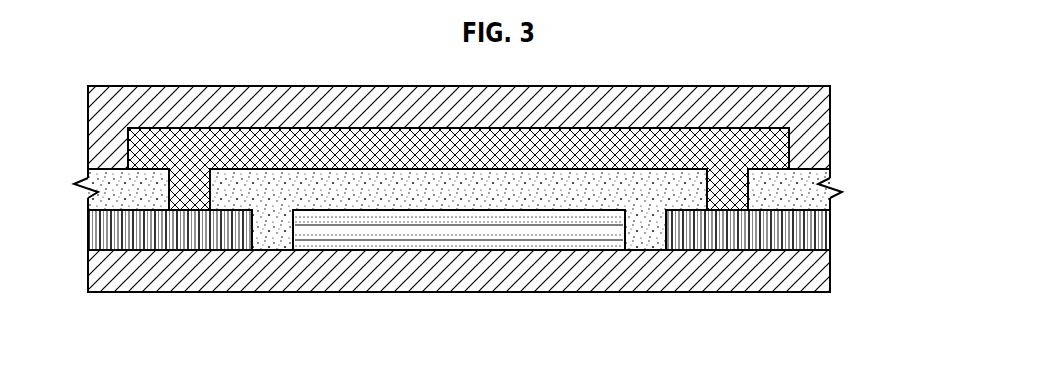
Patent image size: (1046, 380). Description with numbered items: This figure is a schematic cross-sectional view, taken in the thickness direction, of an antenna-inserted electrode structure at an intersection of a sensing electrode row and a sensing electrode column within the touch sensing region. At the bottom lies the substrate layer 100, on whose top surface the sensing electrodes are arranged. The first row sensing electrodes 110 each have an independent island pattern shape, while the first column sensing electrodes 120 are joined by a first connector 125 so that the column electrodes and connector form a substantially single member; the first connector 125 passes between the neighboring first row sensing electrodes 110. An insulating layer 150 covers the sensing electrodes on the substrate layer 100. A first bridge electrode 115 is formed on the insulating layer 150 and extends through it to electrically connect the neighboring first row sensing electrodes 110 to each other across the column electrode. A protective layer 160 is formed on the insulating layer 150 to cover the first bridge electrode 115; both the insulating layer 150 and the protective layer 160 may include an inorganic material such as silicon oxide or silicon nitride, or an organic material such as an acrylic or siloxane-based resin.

The substrate layer 100 is at (822, 272).
The first row sensing electrodes 110 is at (822, 225).
The first bridge electrode 115 is at (787, 138).
The first column sensing electrodes 120 is at (459, 288).
The first connector 125 is at (462, 230).
The insulating layer 150 is at (842, 192).
The protective layer 160 is at (822, 100).